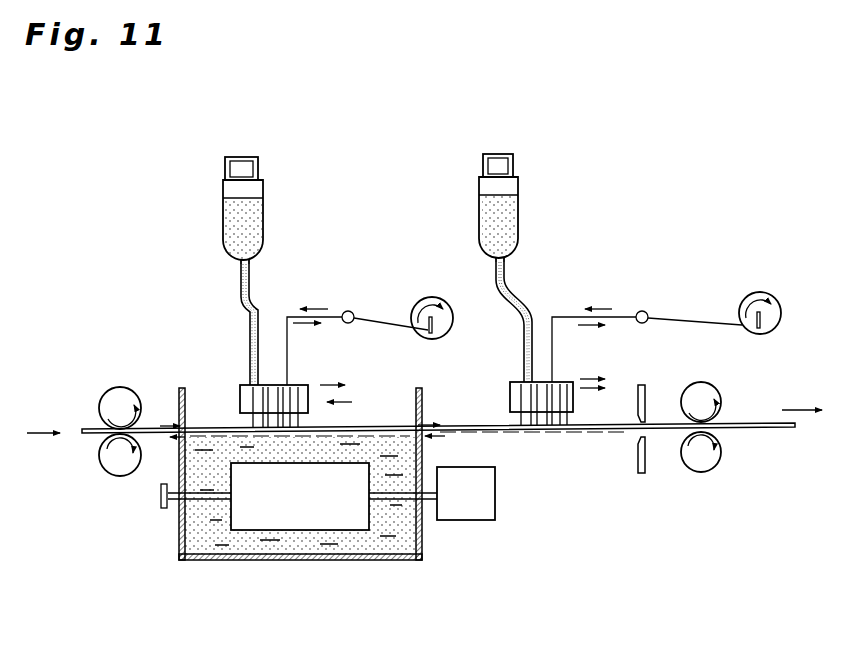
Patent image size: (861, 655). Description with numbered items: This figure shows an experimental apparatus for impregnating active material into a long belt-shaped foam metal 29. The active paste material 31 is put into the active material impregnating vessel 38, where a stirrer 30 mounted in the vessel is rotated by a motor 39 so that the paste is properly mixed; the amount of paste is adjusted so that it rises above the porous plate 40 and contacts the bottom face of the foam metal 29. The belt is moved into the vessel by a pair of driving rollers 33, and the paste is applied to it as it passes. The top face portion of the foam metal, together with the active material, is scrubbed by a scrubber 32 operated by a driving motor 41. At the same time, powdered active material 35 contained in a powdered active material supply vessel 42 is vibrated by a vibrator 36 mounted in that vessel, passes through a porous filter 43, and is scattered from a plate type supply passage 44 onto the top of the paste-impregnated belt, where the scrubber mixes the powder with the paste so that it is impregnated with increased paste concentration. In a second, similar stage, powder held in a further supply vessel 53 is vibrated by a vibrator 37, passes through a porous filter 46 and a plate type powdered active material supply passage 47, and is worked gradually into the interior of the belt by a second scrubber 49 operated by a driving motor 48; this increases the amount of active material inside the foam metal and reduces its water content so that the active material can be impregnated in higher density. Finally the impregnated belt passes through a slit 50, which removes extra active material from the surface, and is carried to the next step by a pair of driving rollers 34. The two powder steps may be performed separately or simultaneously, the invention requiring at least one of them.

The belt-shaped foam metal 29 is at (84, 434).
The stirrer 30 is at (254, 521).
The active paste material 31 is at (393, 526).
The scrubber 32 is at (240, 391).
The driving rollers 33 is at (106, 452).
The driving rollers 34 is at (720, 458).
The powdered active material 35 is at (232, 218).
The vibrator 36 is at (240, 162).
The vibrator 37 is at (497, 160).
The active material impregnating vessel 38 is at (313, 561).
The motor 39 is at (470, 521).
The porous plate 40 is at (375, 441).
The driving motor 41 is at (436, 297).
The powdered active material supply vessel 42 is at (264, 208).
The porous filter 43 is at (252, 262).
The first feed tube 44 is at (258, 296).
The porous filter 46 is at (512, 258).
The plate type powdered active material supply passage 47 is at (512, 285).
The driving motor 48 is at (781, 306).
The scrubber 49 is at (510, 391).
The slit 50 is at (637, 471).
The powdered active material supply vessel 53 is at (519, 212).